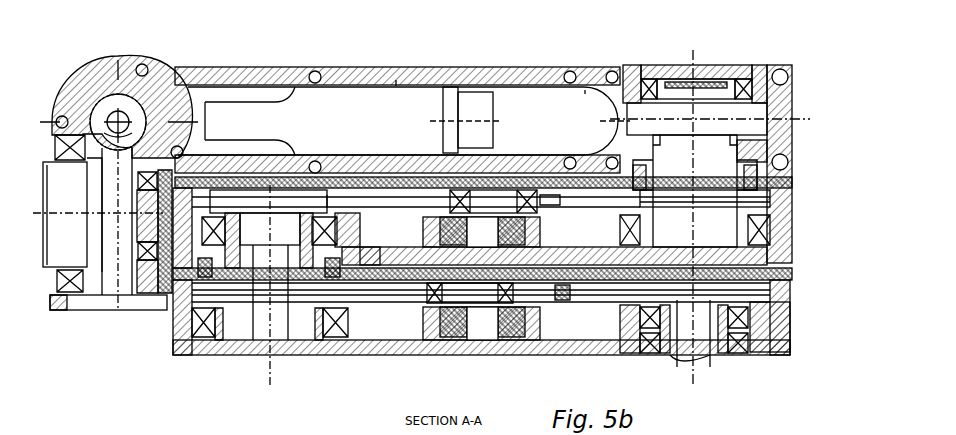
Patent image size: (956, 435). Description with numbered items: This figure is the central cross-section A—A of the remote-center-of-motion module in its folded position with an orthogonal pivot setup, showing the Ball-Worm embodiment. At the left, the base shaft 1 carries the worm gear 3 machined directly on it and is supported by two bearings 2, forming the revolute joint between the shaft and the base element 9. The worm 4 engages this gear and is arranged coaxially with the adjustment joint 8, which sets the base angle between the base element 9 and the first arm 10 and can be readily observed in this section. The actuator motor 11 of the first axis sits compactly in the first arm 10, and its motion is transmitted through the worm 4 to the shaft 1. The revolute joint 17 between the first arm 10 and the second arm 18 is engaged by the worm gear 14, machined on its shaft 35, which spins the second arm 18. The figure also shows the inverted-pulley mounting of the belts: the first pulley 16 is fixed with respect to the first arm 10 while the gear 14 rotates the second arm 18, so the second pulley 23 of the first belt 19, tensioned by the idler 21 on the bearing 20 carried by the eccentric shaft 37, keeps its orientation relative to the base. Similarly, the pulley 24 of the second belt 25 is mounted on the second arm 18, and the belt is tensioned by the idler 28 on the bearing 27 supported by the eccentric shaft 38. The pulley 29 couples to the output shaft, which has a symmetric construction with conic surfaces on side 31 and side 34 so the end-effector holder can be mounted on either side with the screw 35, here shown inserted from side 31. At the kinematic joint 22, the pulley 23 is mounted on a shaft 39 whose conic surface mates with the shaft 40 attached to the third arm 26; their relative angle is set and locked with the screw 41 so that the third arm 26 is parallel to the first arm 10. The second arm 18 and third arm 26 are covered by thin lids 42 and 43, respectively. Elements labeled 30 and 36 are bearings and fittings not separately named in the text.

The base shaft 1 is at (48, 262).
The revolute joint bearings 2 is at (70, 292).
The worm gear 3 is at (112, 300).
The worm 4 is at (108, 80).
The adjustment joint 8 is at (182, 67).
The base element 9 is at (126, 96).
The first arm 10 is at (441, 70).
The actuator motor 11 is at (470, 92).
The worm gear 14 is at (760, 127).
The first pulley 16 is at (760, 199).
The revolute joint 17 is at (742, 70).
The second arm 18 is at (770, 245).
The first belt 19 is at (397, 80).
The bearing 20 is at (522, 195).
The idler 21 is at (545, 195).
The kinematic joint 22 is at (343, 150).
The second pulley 23 is at (262, 200).
The first pulley of second belt 24 is at (232, 345).
The second belt 25 is at (380, 345).
The third arm 26 is at (405, 345).
The bearing 27 is at (433, 345).
The idler 28 is at (520, 300).
The second pulley of second belt 29 is at (622, 345).
The bearing 30 is at (750, 320).
The output shaft side 31 is at (728, 356).
The output shaft side 34 is at (765, 288).
The mounting screw 35 is at (700, 366).
The bushing 36 is at (770, 152).
The eccentric shaft 37 is at (528, 250).
The eccentric shaft 38 is at (460, 345).
The shaft 39 is at (240, 170).
The shaft 40 is at (282, 345).
The screw 41 is at (290, 205).
The lid 42 is at (770, 180).
The lid 43 is at (775, 272).